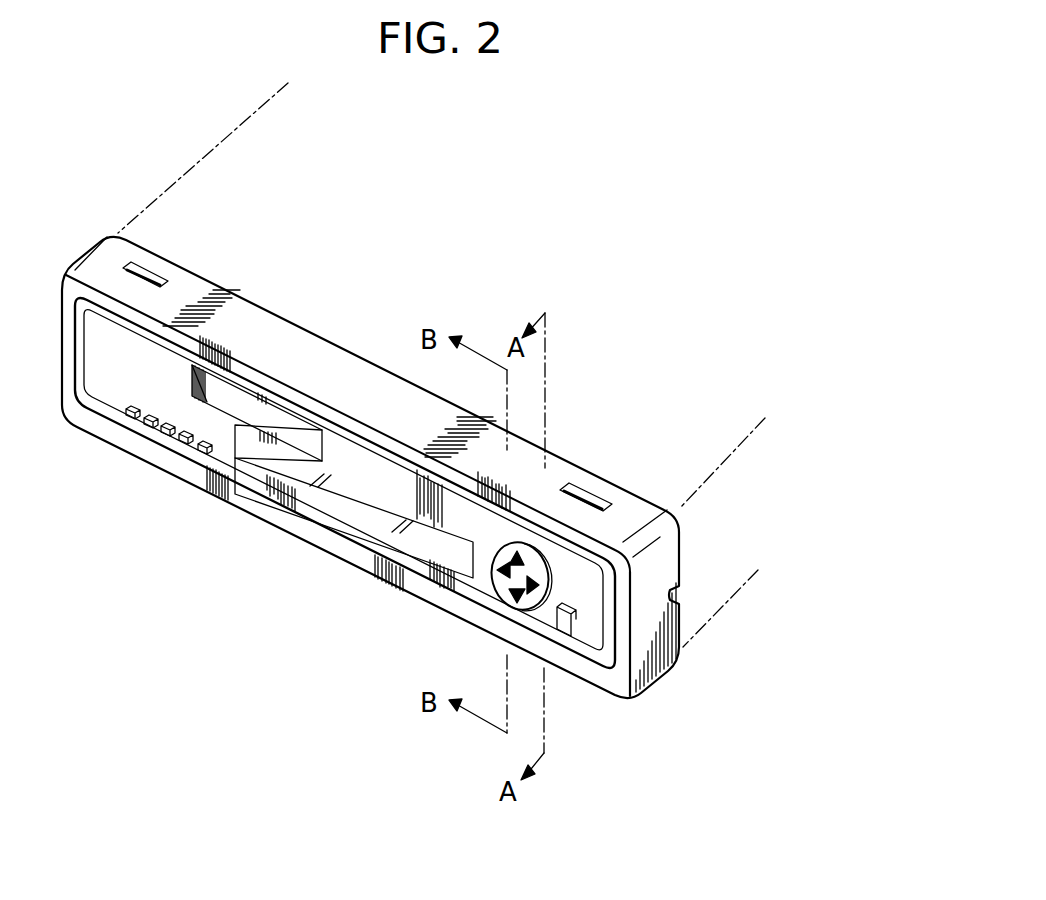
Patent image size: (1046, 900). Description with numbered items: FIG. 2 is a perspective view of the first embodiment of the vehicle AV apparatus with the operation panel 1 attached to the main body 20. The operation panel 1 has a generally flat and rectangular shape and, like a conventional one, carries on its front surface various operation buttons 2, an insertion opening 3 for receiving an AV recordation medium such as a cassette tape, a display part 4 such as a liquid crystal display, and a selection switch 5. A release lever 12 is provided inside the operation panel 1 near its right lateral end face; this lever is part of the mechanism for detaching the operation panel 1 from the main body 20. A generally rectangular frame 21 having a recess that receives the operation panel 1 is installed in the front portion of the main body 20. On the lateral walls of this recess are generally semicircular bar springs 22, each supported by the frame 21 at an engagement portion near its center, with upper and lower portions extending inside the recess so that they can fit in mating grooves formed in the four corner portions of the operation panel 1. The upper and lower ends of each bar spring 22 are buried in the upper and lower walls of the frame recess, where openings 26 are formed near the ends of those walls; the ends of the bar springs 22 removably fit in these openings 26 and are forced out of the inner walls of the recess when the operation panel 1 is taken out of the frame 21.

The operation panel 1 is at (132, 373).
The operation buttons 2 is at (197, 497).
The insertion opening 3 is at (218, 398).
The display part 4 is at (347, 507).
The selection switch 5 is at (500, 586).
The release lever 12 is at (563, 640).
The main body 20 is at (412, 262).
The frame 21 is at (333, 367).
The bar spring 22 is at (152, 275).
The opening 26 is at (128, 268).